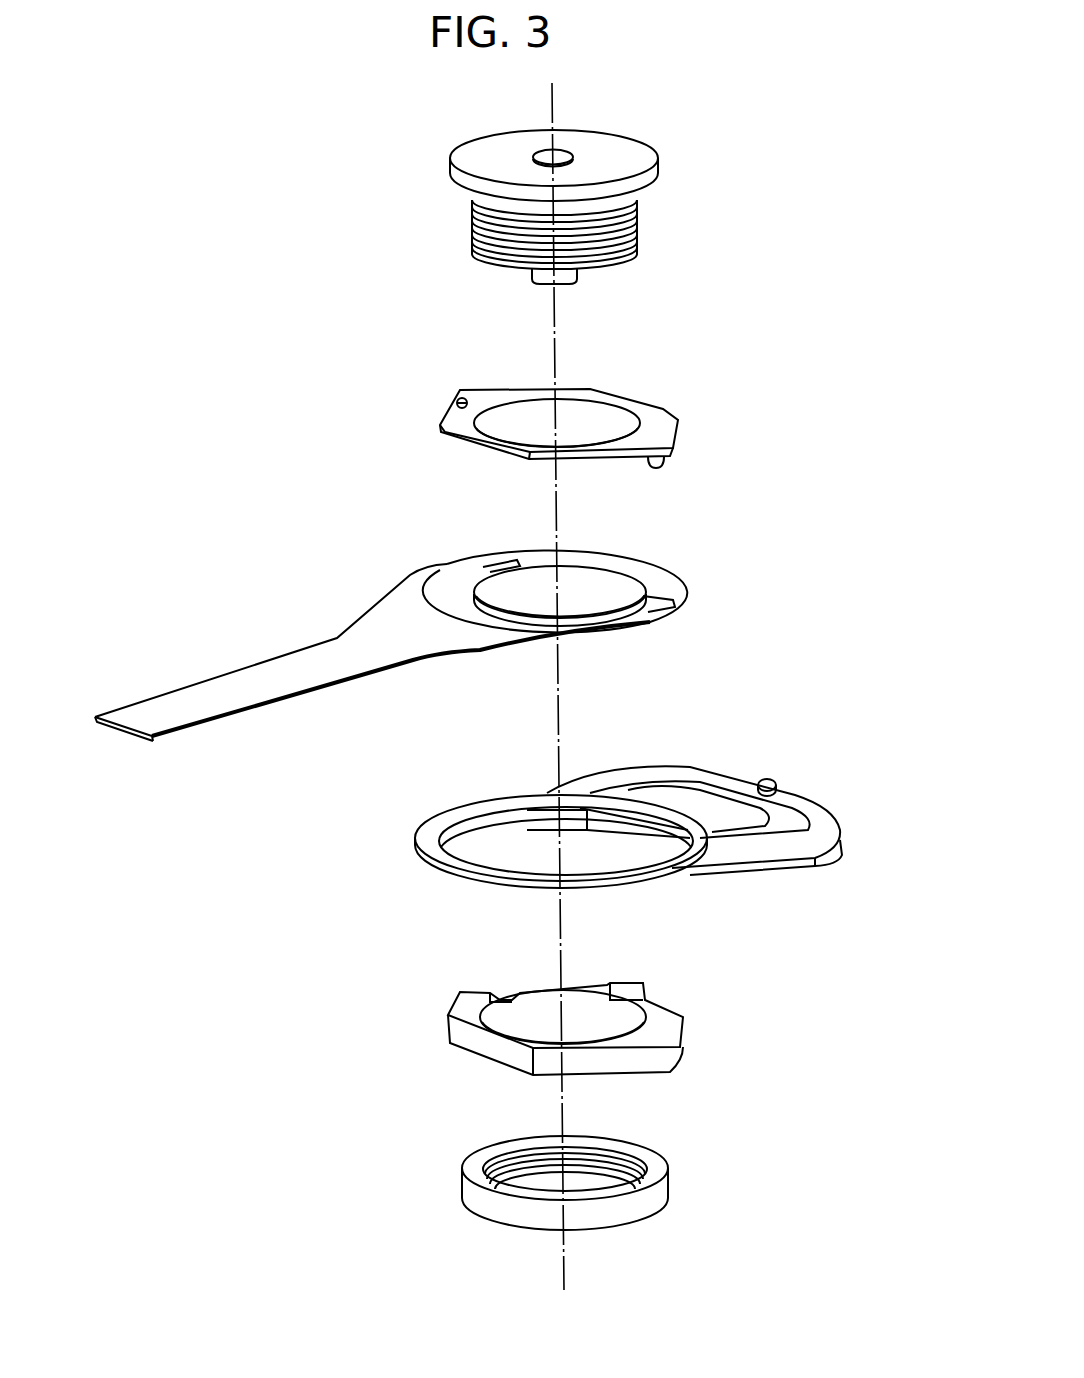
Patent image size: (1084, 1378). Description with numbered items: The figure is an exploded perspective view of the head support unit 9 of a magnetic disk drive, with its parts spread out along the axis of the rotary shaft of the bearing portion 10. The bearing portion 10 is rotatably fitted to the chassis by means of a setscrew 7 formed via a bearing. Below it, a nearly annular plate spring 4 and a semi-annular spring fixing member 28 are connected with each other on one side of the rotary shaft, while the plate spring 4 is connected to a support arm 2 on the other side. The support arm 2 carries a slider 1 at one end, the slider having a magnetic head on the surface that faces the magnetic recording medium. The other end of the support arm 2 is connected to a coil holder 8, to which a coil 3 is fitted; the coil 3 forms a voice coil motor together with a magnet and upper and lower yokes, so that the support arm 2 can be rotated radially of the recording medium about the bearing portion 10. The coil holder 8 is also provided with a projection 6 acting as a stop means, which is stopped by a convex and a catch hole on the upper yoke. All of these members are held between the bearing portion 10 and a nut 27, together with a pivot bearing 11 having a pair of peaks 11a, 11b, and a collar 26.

The slider 1 is at (192, 736).
The support arm 2 is at (399, 624).
The coil 3 is at (760, 835).
The plate spring 4 is at (640, 608).
The projection 6 is at (775, 779).
The setscrew 7 is at (565, 150).
The coil holder 8 is at (830, 823).
The head support unit 9 is at (581, 1338).
The bearing portion 10 is at (630, 233).
The pivot bearing 11 is at (663, 416).
The peak 11a is at (660, 468).
The peak 11b is at (458, 398).
The collar 26 is at (660, 1033).
The nut 27 is at (660, 1193).
The spring fixing member 28 is at (460, 576).